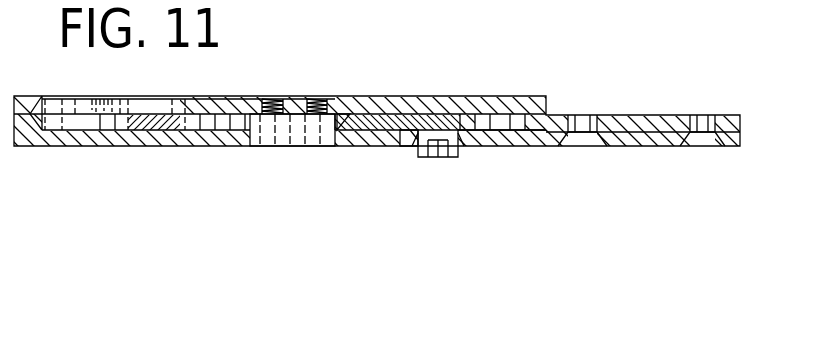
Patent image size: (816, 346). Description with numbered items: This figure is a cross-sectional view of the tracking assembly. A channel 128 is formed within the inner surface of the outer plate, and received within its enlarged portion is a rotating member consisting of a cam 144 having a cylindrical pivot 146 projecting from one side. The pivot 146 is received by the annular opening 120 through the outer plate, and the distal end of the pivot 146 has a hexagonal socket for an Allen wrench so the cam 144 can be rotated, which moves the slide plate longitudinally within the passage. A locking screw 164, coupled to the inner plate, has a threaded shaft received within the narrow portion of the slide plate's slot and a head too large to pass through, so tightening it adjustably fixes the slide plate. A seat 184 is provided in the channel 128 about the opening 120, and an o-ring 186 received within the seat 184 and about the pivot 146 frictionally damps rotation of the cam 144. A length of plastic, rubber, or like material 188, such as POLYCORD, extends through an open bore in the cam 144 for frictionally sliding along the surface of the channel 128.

The cam 144 is at (432, 96).
The locking screw 164 is at (311, 146).
The channel 128 is at (393, 97).
The length of plastic, rubber, or other like material 188 is at (374, 100).
The o-ring 186 is at (410, 144).
The annular opening 120 is at (418, 157).
The cylindrical pivot 146 is at (450, 157).
The seat 184 is at (465, 148).